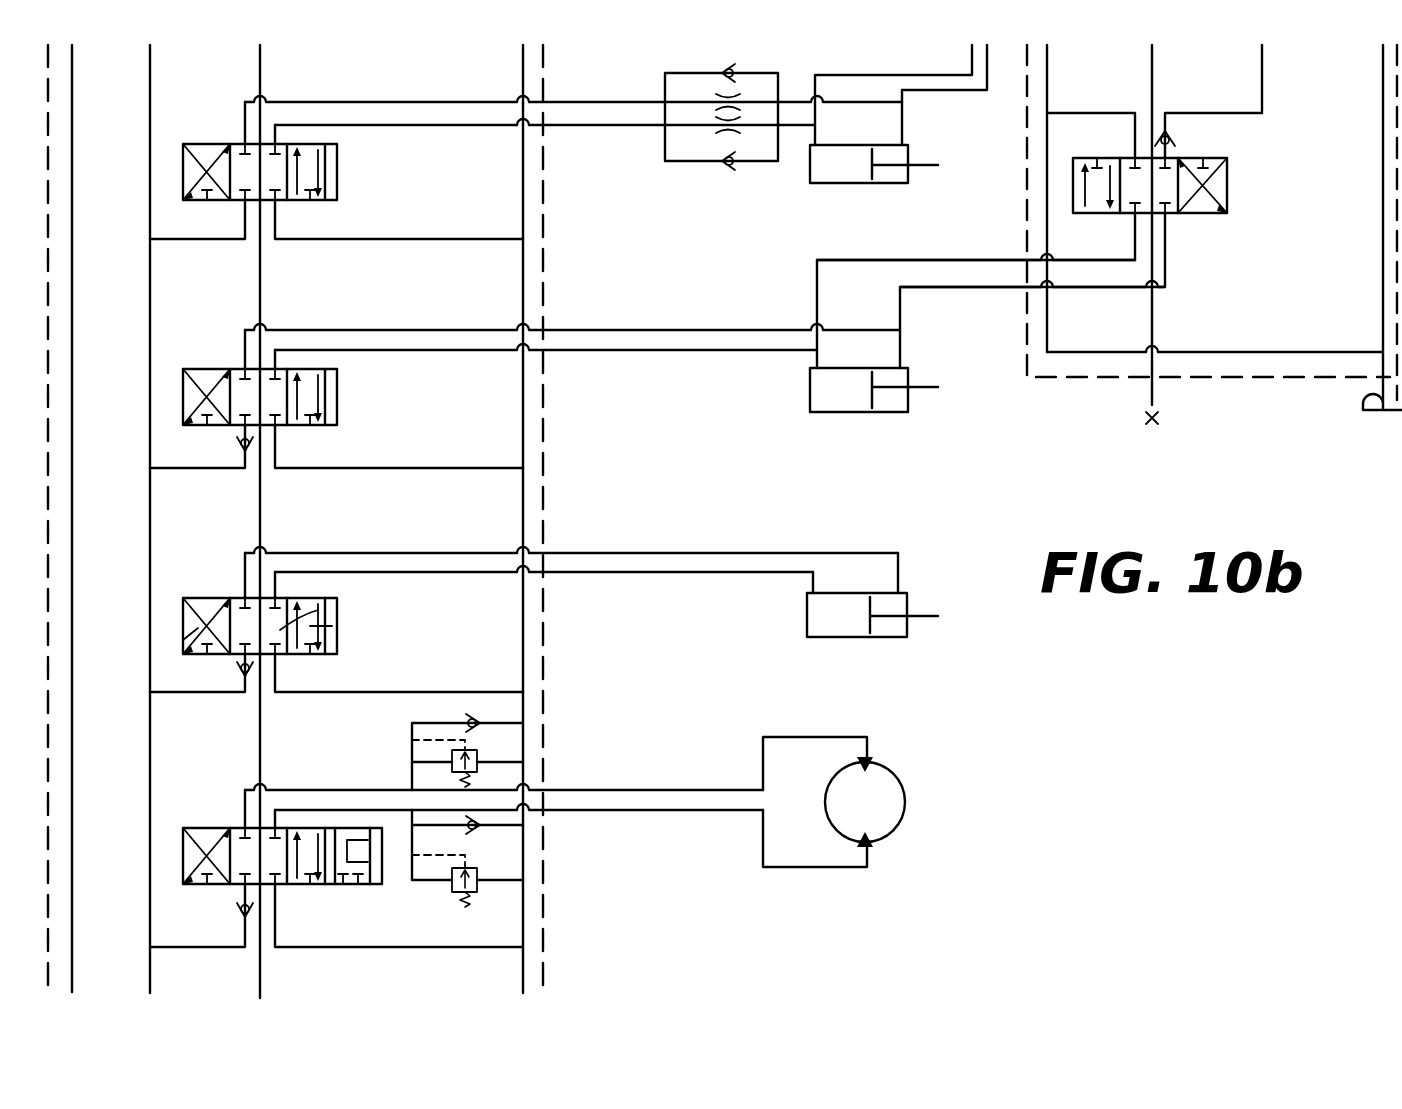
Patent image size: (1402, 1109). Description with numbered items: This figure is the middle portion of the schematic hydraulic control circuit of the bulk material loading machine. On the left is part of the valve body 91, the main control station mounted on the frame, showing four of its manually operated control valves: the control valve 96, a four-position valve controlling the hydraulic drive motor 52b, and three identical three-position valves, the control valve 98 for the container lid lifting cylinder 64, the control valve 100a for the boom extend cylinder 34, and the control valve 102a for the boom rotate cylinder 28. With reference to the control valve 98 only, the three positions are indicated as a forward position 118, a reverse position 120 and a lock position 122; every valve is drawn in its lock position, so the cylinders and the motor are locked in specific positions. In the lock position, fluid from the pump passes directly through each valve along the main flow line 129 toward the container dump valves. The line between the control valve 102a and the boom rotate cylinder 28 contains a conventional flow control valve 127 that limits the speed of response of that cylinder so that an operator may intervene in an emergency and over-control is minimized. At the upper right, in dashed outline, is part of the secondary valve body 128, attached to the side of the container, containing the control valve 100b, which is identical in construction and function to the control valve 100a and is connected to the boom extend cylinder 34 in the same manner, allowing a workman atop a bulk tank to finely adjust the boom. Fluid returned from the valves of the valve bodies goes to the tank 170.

The control valve 102a is at (183, 174).
The control valve 100a is at (183, 395).
The control valve 100b is at (1232, 186).
The control valve 98 is at (183, 622).
The control valve 96 is at (183, 858).
The flow control valve 127 is at (665, 135).
The boom rotate cylinder 28 is at (832, 181).
The boom extend cylinder 34 is at (818, 400).
The container lid lifting cylinder 64 is at (807, 635).
The hydraulic drive motor 52b is at (896, 800).
The main flow line 129 is at (262, 524).
The lock position 122 is at (280, 630).
The forward position 118 is at (332, 626).
The reverse position 120 is at (183, 640).
The valve body 91 is at (548, 659).
The valve body 128 is at (1286, 384).
The tank 170 is at (1360, 396).